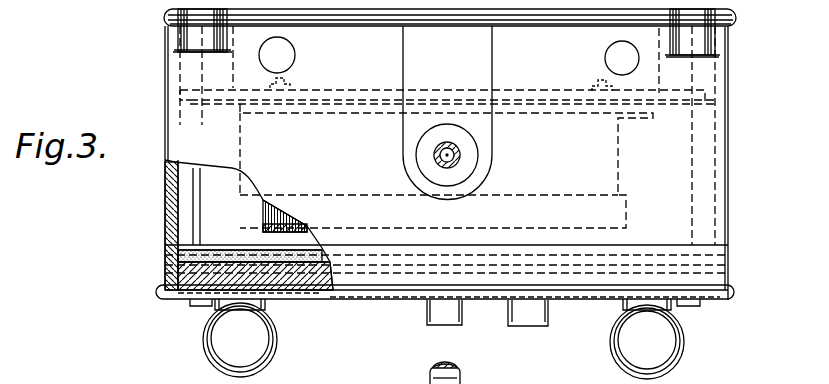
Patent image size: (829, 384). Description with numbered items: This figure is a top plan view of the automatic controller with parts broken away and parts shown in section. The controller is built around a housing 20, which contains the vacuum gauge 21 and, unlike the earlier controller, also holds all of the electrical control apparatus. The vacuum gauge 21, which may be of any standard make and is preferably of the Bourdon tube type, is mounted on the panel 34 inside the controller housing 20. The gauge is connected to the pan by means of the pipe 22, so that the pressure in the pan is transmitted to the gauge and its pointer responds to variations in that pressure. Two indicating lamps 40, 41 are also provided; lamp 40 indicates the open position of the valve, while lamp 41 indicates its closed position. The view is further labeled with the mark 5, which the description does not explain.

The housing 20 is at (728, 265).
The vacuum gauge 21 is at (618, 177).
The pipe 22 is at (460, 155).
The panel 34 is at (705, 104).
The indicating lamp 40 is at (205, 345).
The indicating lamp 41 is at (680, 352).
The direction arrow 5 is at (452, 348).